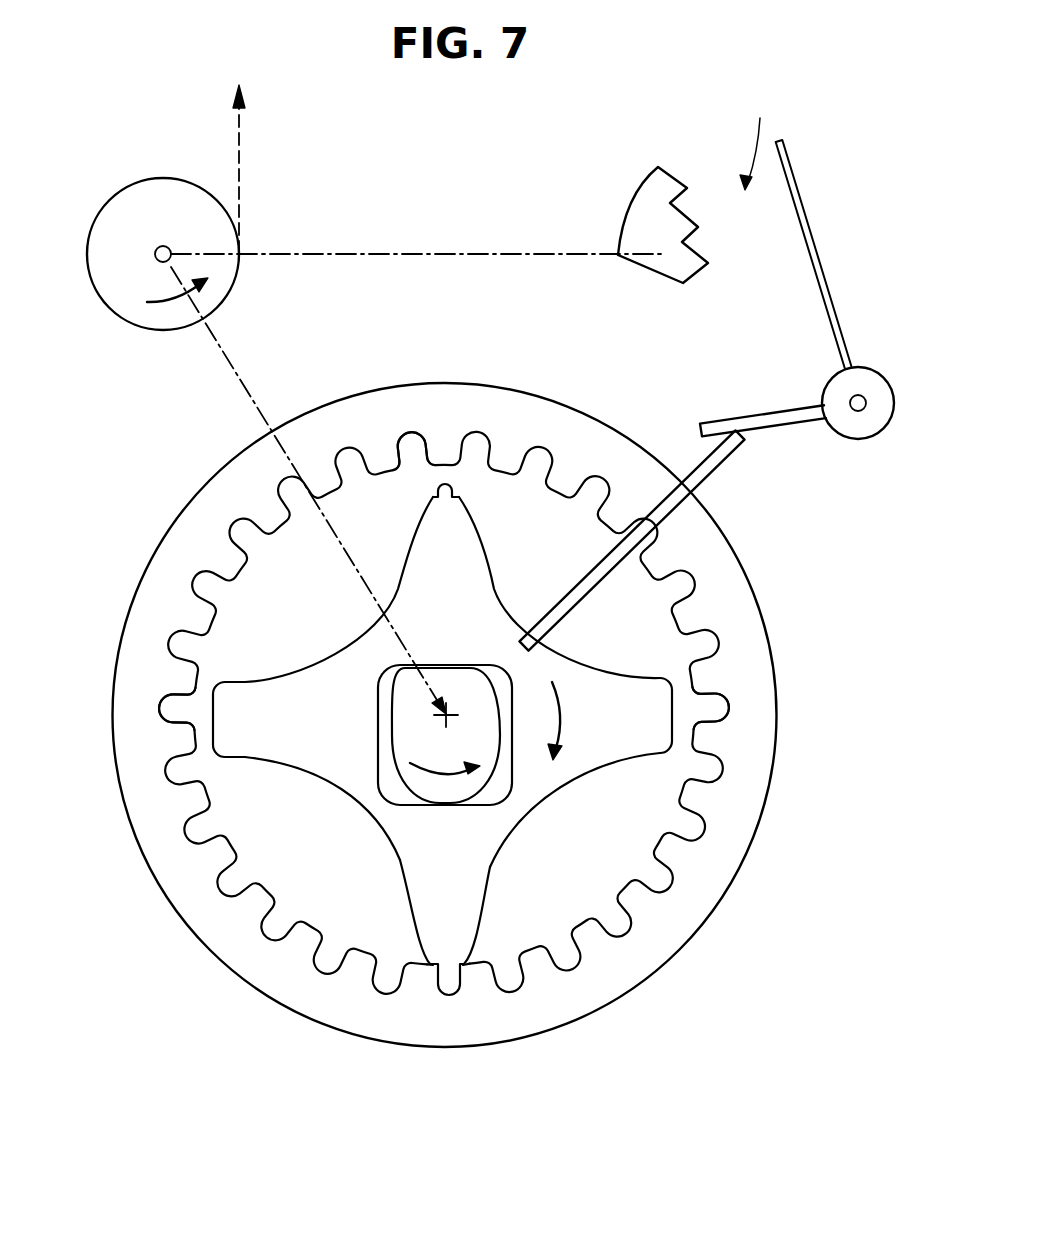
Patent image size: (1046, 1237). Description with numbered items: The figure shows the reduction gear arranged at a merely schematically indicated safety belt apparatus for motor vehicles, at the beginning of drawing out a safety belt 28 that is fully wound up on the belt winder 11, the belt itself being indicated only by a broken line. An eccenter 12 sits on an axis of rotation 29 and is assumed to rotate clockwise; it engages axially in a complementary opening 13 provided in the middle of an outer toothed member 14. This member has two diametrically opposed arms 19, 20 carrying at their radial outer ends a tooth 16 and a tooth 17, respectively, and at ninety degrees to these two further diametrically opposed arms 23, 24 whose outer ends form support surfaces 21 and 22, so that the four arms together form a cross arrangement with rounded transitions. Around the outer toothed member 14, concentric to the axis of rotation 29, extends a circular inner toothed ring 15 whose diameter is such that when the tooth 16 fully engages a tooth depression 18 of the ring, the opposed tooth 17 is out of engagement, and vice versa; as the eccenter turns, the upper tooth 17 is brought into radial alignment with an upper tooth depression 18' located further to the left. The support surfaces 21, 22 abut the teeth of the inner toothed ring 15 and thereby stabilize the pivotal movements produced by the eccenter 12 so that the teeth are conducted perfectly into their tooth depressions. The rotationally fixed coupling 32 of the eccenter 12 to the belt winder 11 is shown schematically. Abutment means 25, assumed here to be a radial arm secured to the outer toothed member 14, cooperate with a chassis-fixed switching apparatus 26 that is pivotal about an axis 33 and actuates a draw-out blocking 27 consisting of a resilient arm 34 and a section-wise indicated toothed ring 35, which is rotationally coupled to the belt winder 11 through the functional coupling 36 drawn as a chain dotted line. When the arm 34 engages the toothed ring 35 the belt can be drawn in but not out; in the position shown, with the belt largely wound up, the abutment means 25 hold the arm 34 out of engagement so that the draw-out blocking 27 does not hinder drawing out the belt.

The belt winder 11 is at (150, 205).
The eccenter 12 is at (402, 727).
The opening 13 is at (376, 756).
The outer toothed member 14 is at (527, 812).
The inner toothed ring 15 is at (598, 944).
The tooth 16 is at (435, 978).
The tooth 17 is at (447, 484).
The tooth depression 18 is at (462, 1031).
The upper tooth depression 18' is at (396, 398).
The arm 19 is at (421, 879).
The arm 20 is at (470, 528).
The support surface 21 is at (213, 715).
The support surface 22 is at (686, 701).
The arm 23 is at (250, 735).
The arm 24 is at (610, 695).
The abutment means 25 is at (722, 457).
The switching apparatus 26 is at (833, 398).
The draw-out blocking 27 is at (759, 136).
The safety belt 28 is at (241, 156).
The axis of rotation 29 is at (452, 690).
The rotationally fixed coupling 32 is at (260, 402).
The axis 33 is at (860, 411).
The resilient arm 34 is at (817, 252).
The toothed ring 35 is at (672, 172).
The functional coupling 36 is at (470, 250).